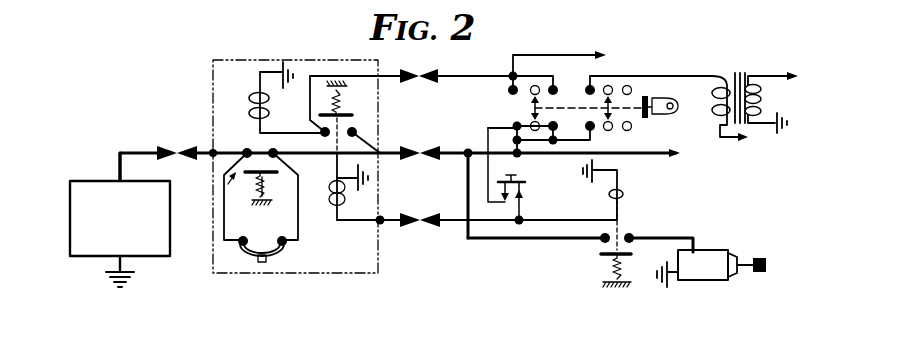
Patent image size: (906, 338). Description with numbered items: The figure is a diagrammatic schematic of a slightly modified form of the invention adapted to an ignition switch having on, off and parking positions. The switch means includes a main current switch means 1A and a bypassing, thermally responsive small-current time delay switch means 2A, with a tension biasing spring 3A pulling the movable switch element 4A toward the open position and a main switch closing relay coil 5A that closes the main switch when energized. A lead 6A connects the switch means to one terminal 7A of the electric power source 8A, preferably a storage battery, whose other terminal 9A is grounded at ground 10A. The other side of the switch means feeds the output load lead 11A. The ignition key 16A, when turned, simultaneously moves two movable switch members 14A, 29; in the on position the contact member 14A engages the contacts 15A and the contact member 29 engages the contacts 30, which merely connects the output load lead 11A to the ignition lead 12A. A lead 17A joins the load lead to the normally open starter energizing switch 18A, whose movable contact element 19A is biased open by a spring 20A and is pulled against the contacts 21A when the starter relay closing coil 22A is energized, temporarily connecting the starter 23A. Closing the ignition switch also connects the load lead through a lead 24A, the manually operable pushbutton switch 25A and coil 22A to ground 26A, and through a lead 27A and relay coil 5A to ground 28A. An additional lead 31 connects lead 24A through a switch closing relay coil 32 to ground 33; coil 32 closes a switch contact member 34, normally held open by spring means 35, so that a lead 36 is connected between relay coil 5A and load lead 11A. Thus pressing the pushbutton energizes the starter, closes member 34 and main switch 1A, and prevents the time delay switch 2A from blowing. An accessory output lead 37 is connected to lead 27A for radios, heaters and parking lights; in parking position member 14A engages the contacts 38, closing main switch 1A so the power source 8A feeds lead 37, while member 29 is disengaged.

The main current switch means 1A is at (233, 182).
The bypassing time delay switch means 2A is at (278, 256).
The tension biasing spring 3A is at (255, 203).
The movable switch element 4A is at (250, 178).
The main switch closing relay coil 5A is at (250, 104).
The lead 6A is at (158, 150).
The terminal 7A is at (116, 176).
The electric power source 8A is at (70, 206).
The terminal 9A is at (116, 260).
The ground 10A is at (124, 282).
The output load lead 11A is at (395, 152).
The ignition lead 12A is at (680, 76).
The movable switch member 14A is at (533, 108).
The contacts 15A is at (511, 90).
The ignition key 16A is at (655, 114).
The lead 17A is at (484, 240).
The starter energizing switch 18A is at (642, 216).
The movable contact element 19A is at (612, 270).
The spring 20A is at (612, 283).
The contacts 21A is at (602, 242).
The starter relay closing coil 22A is at (609, 195).
The starter 23A is at (700, 290).
The lead 24A is at (468, 176).
The pushbutton switch 25A is at (468, 199).
The ground 26A is at (588, 170).
The lead 27A is at (440, 77).
The ground 28A is at (281, 72).
The movable switch member 29 is at (622, 155).
The contacts 30 is at (590, 89).
The lead 31 is at (450, 222).
The switch closing relay coil 32 is at (329, 192).
The ground 33 is at (362, 180).
The switch contact member 34 is at (320, 130).
The spring means 35 is at (327, 78).
The lead 36 is at (356, 130).
The accessory output lead 37 is at (606, 58).
The contacts 38 is at (555, 88).